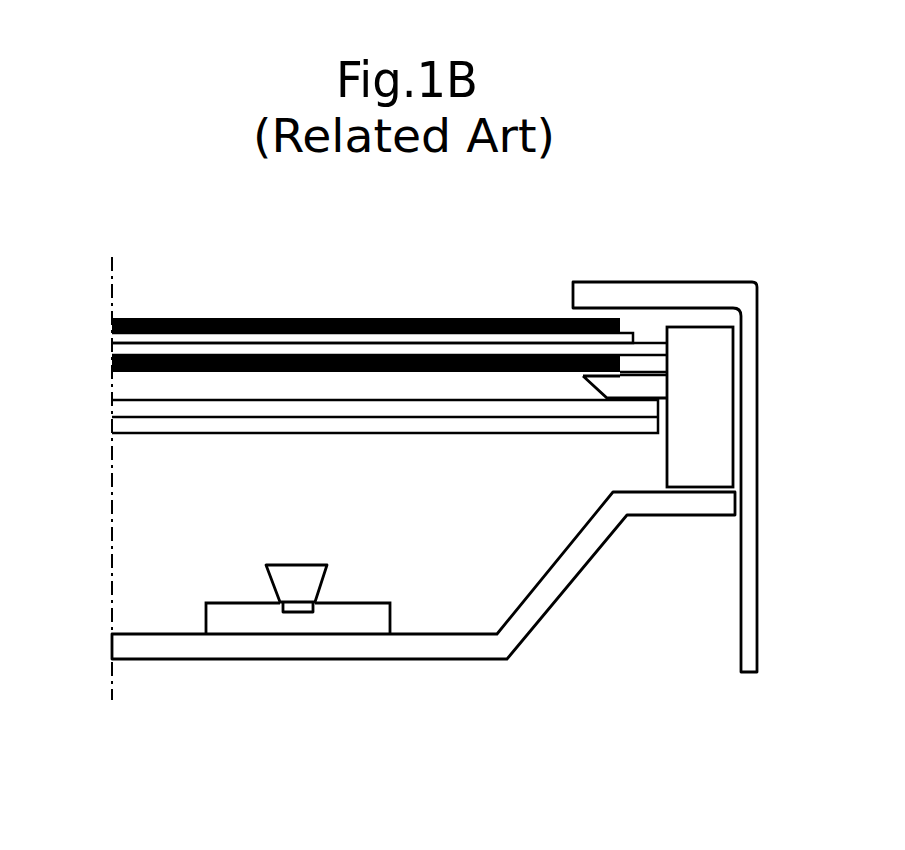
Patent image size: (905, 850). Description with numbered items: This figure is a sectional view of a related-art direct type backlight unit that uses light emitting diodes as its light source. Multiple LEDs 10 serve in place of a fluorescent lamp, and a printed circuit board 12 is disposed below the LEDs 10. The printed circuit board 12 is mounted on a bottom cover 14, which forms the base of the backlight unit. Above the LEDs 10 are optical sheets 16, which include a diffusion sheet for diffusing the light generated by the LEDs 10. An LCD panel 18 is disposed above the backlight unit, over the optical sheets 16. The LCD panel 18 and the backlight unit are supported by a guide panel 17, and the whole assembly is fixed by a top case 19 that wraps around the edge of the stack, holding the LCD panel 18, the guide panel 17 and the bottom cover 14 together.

The LEDs 10 is at (293, 606).
The printed circuit board 12 is at (345, 623).
The bottom cover 14 is at (552, 587).
The optical sheets 16 is at (107, 405).
The guide panel 17 is at (720, 403).
The LCD panel 18 is at (107, 320).
The top case 19 is at (750, 500).